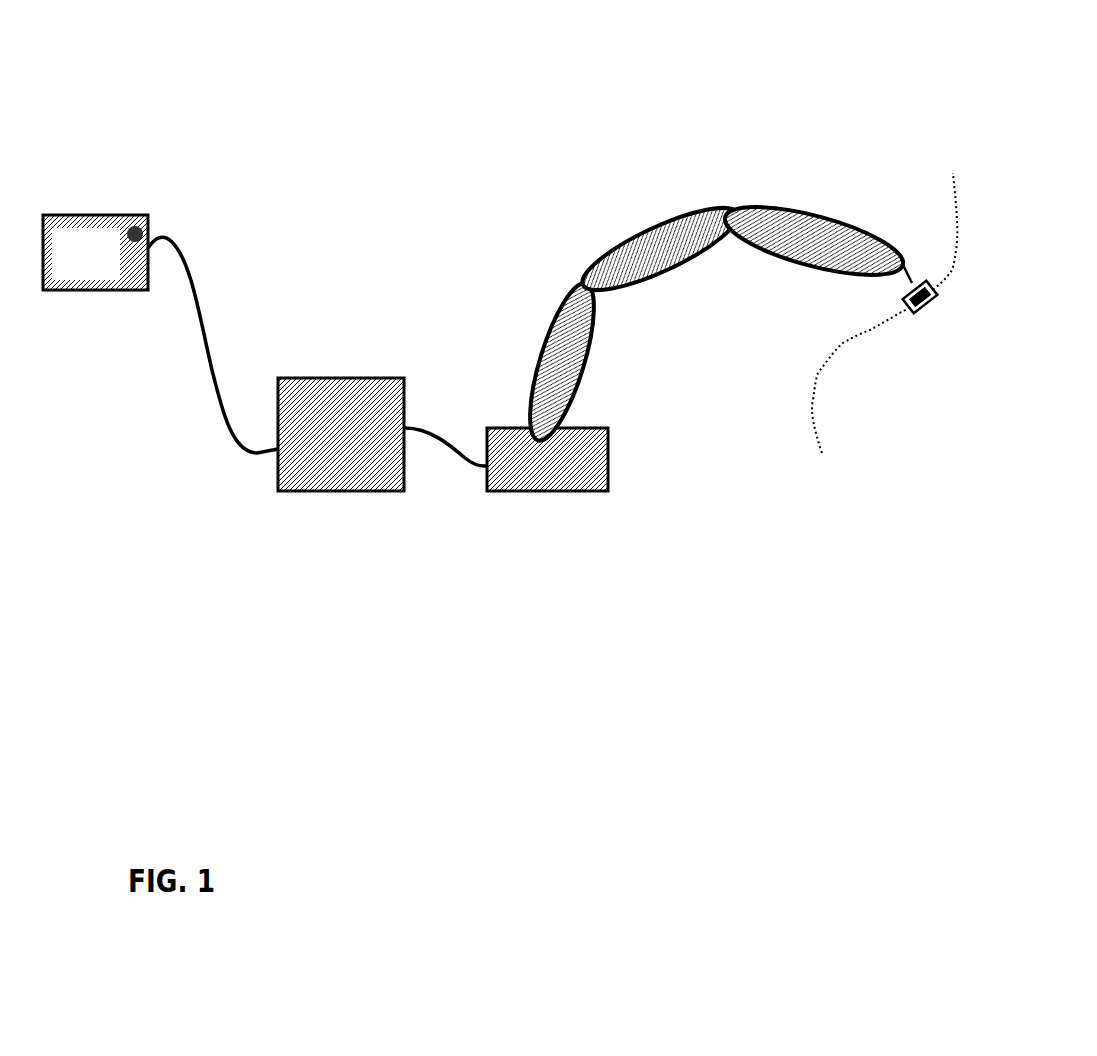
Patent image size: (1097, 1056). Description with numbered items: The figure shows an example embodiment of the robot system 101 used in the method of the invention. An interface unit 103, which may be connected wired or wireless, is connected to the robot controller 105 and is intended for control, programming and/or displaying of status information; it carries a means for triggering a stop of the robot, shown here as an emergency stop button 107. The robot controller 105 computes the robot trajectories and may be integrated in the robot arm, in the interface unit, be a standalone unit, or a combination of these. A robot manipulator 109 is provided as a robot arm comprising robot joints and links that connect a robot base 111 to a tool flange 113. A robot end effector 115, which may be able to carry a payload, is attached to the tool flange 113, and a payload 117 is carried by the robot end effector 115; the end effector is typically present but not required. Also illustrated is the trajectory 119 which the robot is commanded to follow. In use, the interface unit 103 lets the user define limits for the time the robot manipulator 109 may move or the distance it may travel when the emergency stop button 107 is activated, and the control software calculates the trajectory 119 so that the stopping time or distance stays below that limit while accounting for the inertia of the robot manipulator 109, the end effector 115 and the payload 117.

The robot system 101 is at (438, 88).
The interface unit 103 is at (90, 217).
The robot controller 105 is at (340, 376).
The emergency stop button 107 is at (140, 224).
The robot manipulator 109 is at (657, 243).
The robot base 111 is at (592, 482).
The tool flange 113 is at (902, 258).
The robot end effector 115 is at (923, 300).
The payload 117 is at (923, 313).
The trajectory 119 is at (813, 403).